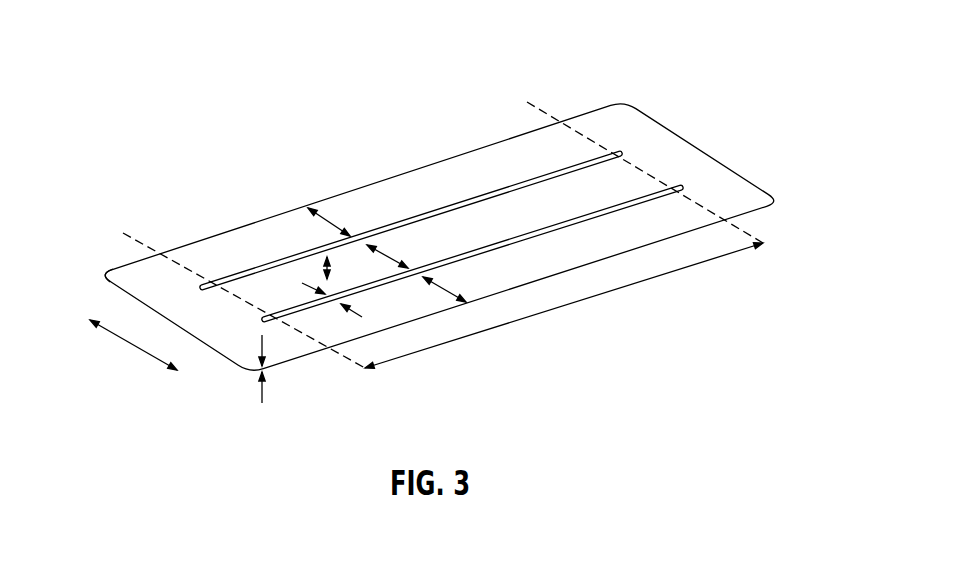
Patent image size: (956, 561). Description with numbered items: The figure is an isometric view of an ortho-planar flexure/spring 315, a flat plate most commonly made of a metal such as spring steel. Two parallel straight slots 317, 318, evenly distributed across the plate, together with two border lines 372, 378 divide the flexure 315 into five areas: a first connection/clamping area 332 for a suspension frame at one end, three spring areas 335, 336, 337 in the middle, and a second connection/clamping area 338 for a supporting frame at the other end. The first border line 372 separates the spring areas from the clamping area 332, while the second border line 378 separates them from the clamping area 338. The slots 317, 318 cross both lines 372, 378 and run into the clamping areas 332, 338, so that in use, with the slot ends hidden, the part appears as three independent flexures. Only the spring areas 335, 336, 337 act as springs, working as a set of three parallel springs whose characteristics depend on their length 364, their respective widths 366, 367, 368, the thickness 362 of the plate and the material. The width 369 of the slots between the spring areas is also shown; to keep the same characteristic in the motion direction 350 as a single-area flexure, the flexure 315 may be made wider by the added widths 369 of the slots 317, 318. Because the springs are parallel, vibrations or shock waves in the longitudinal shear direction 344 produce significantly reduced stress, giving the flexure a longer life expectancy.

The ortho-planar flexure/spring 315 is at (743, 150).
The first slot 317 is at (452, 210).
The second slot 318 is at (470, 252).
The first connection/clamping area 332 is at (112, 278).
The first flexure/spring area 335 is at (537, 147).
The second flexure/spring area 336 is at (582, 197).
The third flexure/spring area 337 is at (625, 237).
The second connection/clamping area 338 is at (682, 157).
The longitudinal direction 344 is at (133, 347).
The direction of movement 350 is at (327, 268).
The thickness of flexure/spring 362 is at (262, 395).
The length of flexure/spring areas 364 is at (563, 307).
The width of the first flexure/spring area 366 is at (333, 220).
The width of the second flexure/spring area 367 is at (390, 256).
The width of the third flexure/spring area 368 is at (443, 290).
The width of the slots 369 is at (352, 314).
The border to connection/clamping area of a suspension frame 372 is at (123, 233).
The border to connection/clamping area of a supporting frame 378 is at (527, 102).